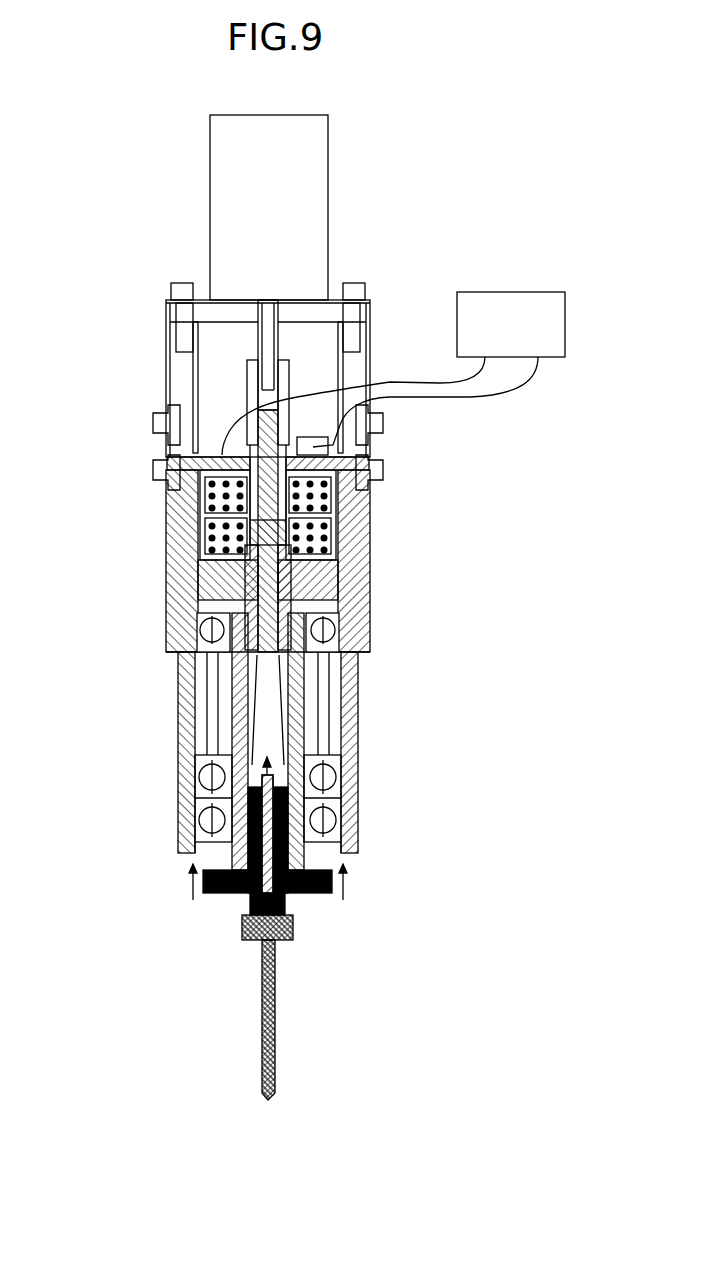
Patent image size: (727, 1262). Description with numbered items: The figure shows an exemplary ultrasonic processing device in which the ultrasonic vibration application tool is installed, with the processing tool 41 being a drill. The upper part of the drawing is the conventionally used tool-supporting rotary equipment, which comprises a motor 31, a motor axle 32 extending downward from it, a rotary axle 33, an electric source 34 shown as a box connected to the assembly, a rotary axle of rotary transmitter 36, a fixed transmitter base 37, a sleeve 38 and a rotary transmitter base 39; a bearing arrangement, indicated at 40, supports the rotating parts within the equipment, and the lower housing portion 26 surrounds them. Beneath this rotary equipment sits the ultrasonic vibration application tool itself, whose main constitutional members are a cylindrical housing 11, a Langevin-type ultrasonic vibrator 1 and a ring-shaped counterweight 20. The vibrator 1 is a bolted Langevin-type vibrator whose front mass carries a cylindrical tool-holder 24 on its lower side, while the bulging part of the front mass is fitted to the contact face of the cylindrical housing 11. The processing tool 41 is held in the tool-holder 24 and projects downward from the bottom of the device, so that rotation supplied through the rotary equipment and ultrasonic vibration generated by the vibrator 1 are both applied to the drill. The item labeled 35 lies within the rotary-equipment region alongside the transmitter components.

The Langevin-type ultrasonic vibrator 1 is at (190, 806).
The cylindrical housing 11 is at (310, 722).
The ring-shaped counterweight 20 is at (345, 880).
The cylindrical tool-holder 24 is at (252, 893).
The lower housing 26 is at (352, 672).
The motor 31 is at (290, 232).
The motor axle 32 is at (268, 340).
The rotary axle 33 is at (172, 445).
The electric source 34 is at (520, 328).
The coil 35 is at (345, 492).
The rotary axle of rotary transmitter 36 is at (185, 533).
The fixed transmitter base 37 is at (372, 445).
The sleeve 38 is at (180, 565).
The rotary transmitter base 39 is at (358, 574).
The upper bearing 40 is at (205, 780).
The processing tool 41 is at (273, 1018).